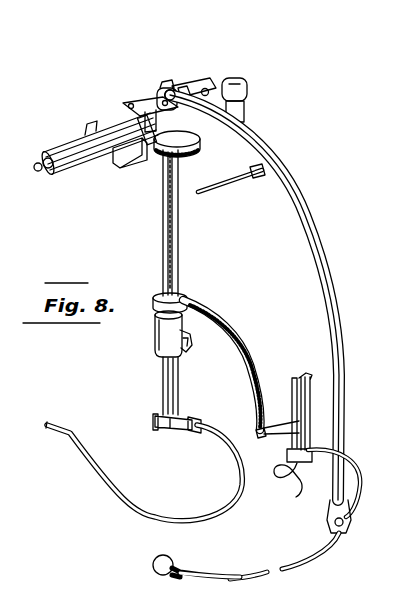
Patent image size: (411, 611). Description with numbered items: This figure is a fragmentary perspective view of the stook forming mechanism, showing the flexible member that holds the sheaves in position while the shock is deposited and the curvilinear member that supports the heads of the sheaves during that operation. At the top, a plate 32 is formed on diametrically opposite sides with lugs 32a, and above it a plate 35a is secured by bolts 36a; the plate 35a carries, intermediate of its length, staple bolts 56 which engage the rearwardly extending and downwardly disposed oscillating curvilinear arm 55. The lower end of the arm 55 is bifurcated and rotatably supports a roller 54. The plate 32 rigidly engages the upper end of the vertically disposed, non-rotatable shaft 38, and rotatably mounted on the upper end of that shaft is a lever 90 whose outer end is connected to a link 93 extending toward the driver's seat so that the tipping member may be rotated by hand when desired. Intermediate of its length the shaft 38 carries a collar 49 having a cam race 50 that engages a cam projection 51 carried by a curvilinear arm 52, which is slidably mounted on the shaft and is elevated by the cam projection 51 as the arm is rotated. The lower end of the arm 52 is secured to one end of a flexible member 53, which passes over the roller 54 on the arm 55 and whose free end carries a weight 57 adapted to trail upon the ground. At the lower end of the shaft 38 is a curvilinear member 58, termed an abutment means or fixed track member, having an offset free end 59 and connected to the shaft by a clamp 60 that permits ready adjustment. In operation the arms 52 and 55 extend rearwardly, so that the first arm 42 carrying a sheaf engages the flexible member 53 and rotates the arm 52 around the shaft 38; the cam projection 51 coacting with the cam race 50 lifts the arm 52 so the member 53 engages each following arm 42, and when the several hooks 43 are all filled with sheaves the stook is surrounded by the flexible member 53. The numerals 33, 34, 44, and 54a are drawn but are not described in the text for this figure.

The plate 32 is at (157, 98).
The lugs 32a is at (205, 90).
The tube 33 is at (133, 150).
The pillow block 34 is at (243, 122).
The plate 35a is at (143, 101).
The bolts 36a is at (152, 150).
The shaft 38 is at (180, 220).
The arm 42 is at (307, 405).
The hooks 43 is at (285, 489).
The hinge link 44 is at (274, 431).
The collar 49 is at (160, 340).
The cam race 50 is at (157, 350).
The cam projection 51 is at (183, 347).
The curvilinear arm 52 is at (231, 331).
The flexible member 53 is at (356, 470).
The roller 54 is at (341, 533).
The rod end 54a is at (162, 180).
The curvilinear arm 55 is at (345, 364).
The staple bolts 56 is at (187, 93).
The weight 57 is at (153, 569).
The curvilinear member 58 is at (163, 517).
The offset free end 59 is at (60, 430).
The clamp 60 is at (183, 420).
The lever 90 is at (184, 145).
The link 93 is at (228, 180).